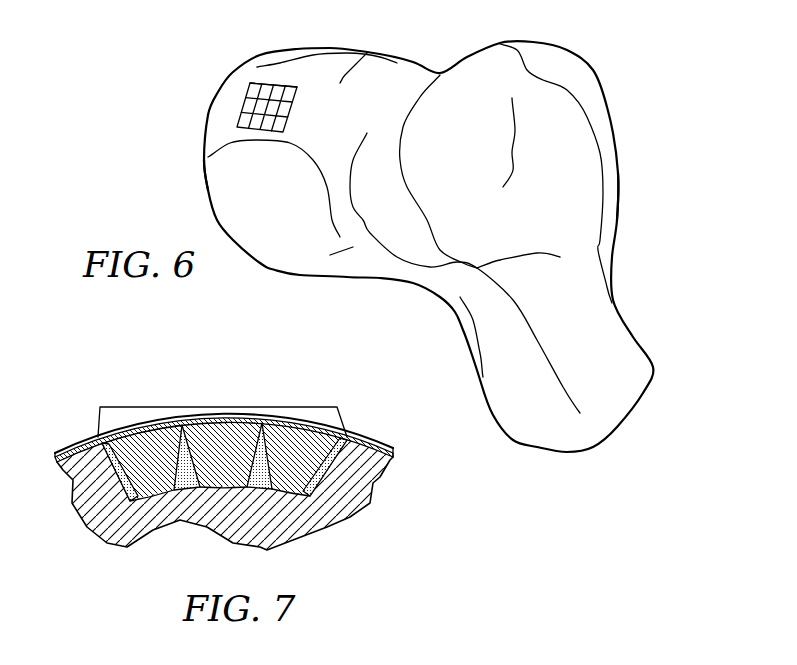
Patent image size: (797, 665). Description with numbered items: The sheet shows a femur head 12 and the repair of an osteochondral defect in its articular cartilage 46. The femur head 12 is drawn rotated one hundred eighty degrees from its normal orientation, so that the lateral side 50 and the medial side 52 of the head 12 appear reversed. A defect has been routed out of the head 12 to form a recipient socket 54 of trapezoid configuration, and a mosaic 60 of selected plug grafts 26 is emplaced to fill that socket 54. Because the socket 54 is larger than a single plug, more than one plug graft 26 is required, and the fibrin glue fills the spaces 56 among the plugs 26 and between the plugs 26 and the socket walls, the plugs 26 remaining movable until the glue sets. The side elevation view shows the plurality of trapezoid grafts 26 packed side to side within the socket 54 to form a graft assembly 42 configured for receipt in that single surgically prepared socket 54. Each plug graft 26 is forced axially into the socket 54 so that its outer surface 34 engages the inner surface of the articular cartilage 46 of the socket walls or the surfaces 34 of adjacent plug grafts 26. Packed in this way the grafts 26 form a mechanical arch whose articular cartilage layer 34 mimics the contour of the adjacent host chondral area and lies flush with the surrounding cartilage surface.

In FIG. 6, the femur head 12 is at (611, 122).
In FIG. 7, the femur head 12 is at (242, 472).
In FIG. 7, the plug graft 26 is at (80, 497).
In FIG. 7, the articular cartilage layer 34 is at (143, 430).
In FIG. 7, the graft assembly 42 is at (221, 407).
In FIG. 6, the articular cartilage 46 is at (368, 52).
In FIG. 7, the articular cartilage 46 is at (63, 448).
In FIG. 6, the lateral side 50 is at (187, 170).
In FIG. 6, the medial side 52 is at (622, 147).
In FIG. 6, the recipient socket 54 is at (270, 82).
In FIG. 7, the recipient socket 54 is at (262, 492).
In FIG. 7, the space 56 is at (128, 500).
In FIG. 6, the mosaic 60 is at (258, 100).